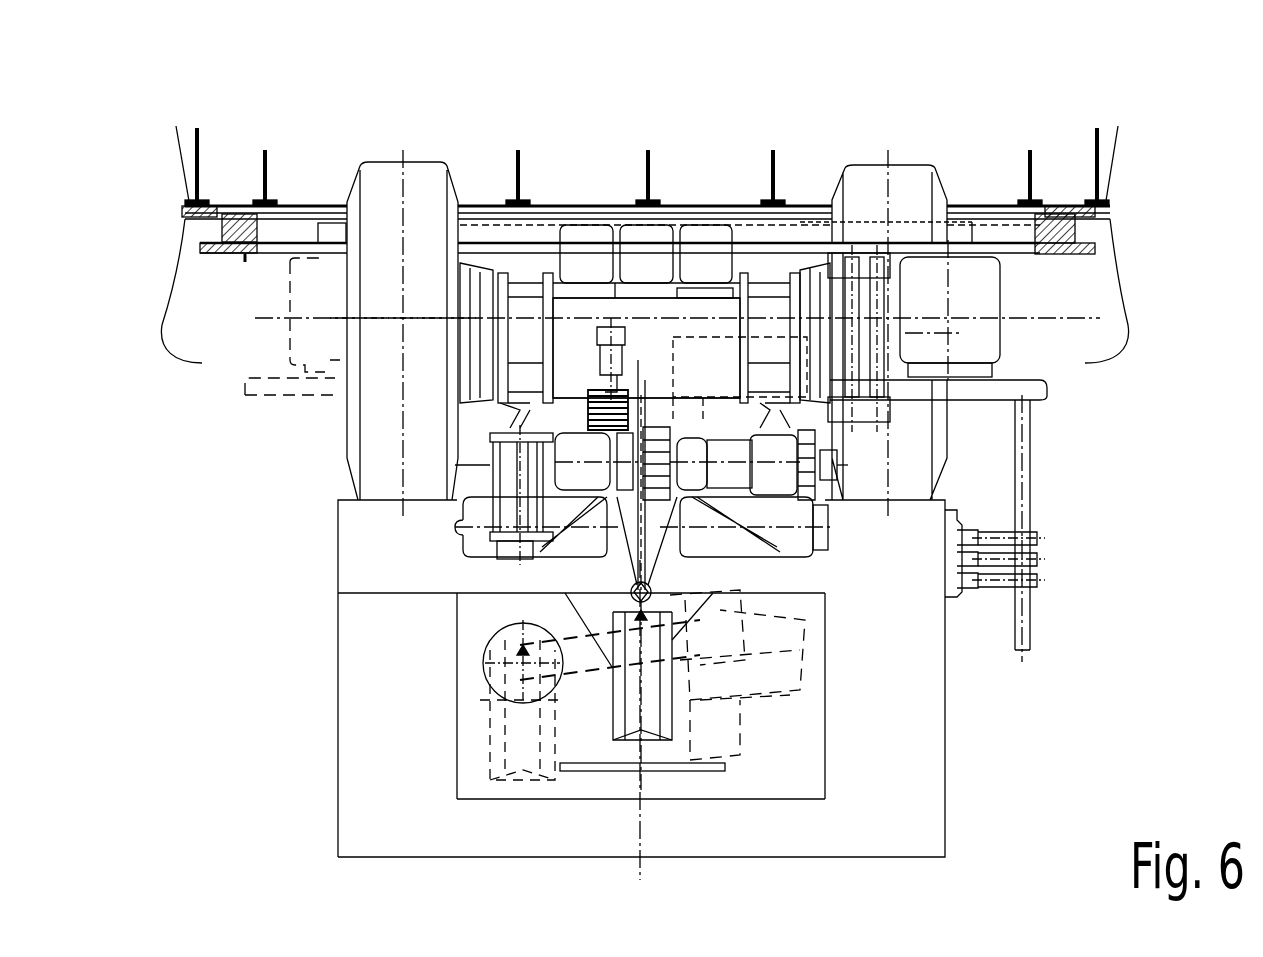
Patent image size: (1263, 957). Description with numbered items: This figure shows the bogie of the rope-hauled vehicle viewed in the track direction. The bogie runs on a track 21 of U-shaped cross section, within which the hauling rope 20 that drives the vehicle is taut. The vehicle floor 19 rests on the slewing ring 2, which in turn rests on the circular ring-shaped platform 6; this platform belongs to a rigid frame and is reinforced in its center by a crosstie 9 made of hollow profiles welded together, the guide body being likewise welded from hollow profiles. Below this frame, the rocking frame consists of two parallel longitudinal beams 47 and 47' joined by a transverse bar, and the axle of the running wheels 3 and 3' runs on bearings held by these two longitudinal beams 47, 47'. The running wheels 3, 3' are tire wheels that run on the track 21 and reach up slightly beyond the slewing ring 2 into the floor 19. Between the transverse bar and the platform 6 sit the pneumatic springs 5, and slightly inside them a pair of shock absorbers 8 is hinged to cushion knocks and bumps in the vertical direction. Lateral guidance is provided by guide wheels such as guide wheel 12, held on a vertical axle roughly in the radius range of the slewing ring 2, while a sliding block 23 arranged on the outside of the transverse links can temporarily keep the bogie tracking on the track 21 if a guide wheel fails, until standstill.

The longitudinal beam 47 is at (490, 237).
The crosstie 9 is at (697, 222).
The longitudinal beam 47' is at (787, 237).
The floor 19 is at (1031, 195).
The slewing ring 2 is at (1077, 230).
The platform 6 is at (1092, 255).
The pneumatic spring 5 is at (975, 313).
The shock absorber 8 is at (858, 378).
The running wheel 3' is at (999, 335).
The running wheel 3 is at (318, 338).
The guide wheel 12 is at (472, 522).
The hauling rope 20 is at (338, 593).
The sliding block 23 is at (822, 540).
The track 21 is at (883, 802).